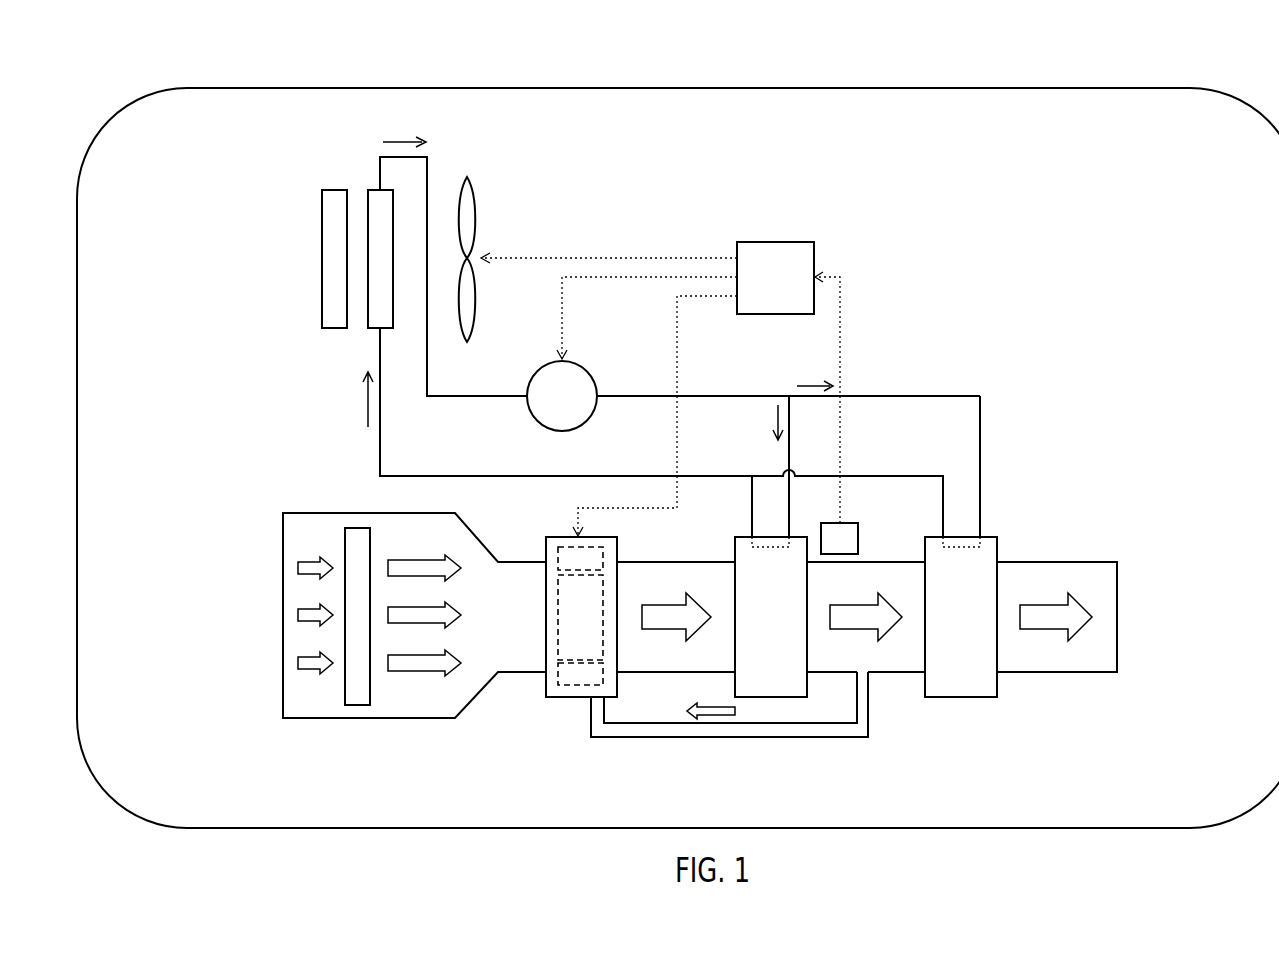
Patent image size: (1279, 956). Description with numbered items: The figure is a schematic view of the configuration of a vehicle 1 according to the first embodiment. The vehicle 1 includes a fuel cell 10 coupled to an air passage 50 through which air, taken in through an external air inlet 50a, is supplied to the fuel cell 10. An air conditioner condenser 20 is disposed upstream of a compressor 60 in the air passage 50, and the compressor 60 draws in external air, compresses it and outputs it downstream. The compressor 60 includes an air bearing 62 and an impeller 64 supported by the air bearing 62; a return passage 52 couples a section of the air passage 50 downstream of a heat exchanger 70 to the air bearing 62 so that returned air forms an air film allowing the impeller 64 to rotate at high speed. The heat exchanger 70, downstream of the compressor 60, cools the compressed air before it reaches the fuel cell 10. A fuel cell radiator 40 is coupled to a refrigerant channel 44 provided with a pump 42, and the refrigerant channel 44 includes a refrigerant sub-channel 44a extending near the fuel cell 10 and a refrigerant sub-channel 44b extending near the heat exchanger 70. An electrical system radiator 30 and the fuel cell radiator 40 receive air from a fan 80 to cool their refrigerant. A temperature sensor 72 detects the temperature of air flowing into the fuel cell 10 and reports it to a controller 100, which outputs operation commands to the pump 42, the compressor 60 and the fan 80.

The vehicle 1 is at (78, 38).
The fuel cell 10 is at (965, 698).
The air conditioner condenser 20 is at (352, 528).
The electrical system radiator 30 is at (334, 190).
The fuel cell radiator 40 is at (380, 190).
The pump 42 is at (580, 364).
The refrigerant channel 44 is at (482, 385).
The refrigerant sub-channel 44a is at (905, 395).
The refrigerant sub-channel 44b is at (788, 452).
The air passage 50 is at (405, 720).
The external air inlet 50a is at (283, 688).
The return passage 52 is at (660, 738).
The compressor 60 is at (580, 700).
The air bearing 62 is at (565, 545).
The impeller 64 is at (557, 620).
The heat exchanger 70 is at (778, 698).
The temperature sensor 72 is at (860, 536).
The fan 80 is at (476, 190).
The controller 100 is at (775, 242).